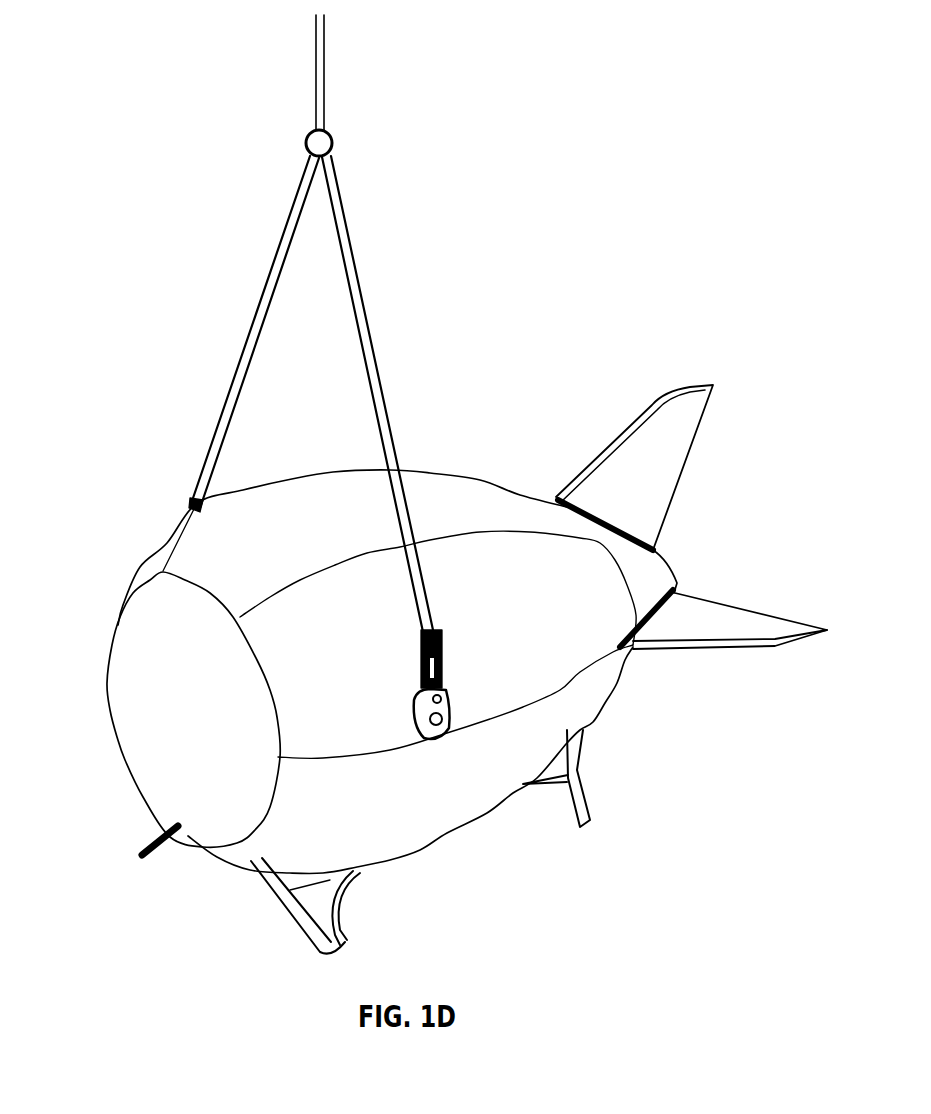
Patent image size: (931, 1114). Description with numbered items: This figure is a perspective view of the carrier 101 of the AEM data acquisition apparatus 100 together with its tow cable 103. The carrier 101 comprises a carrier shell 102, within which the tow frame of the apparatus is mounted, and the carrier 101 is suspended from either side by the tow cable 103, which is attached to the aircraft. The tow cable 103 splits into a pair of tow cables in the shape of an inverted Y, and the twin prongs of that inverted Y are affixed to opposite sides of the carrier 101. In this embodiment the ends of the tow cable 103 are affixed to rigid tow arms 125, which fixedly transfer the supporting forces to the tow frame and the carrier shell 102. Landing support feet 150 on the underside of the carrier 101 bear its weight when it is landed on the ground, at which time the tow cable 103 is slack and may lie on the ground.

The AEM data acquisition apparatus 100 is at (143, 328).
The carrier 101 is at (468, 487).
The carrier shell 102 is at (197, 532).
The tow cable 103 is at (313, 80).
The rigid tow arms 125 is at (447, 690).
The landing support feet 150 is at (592, 787).